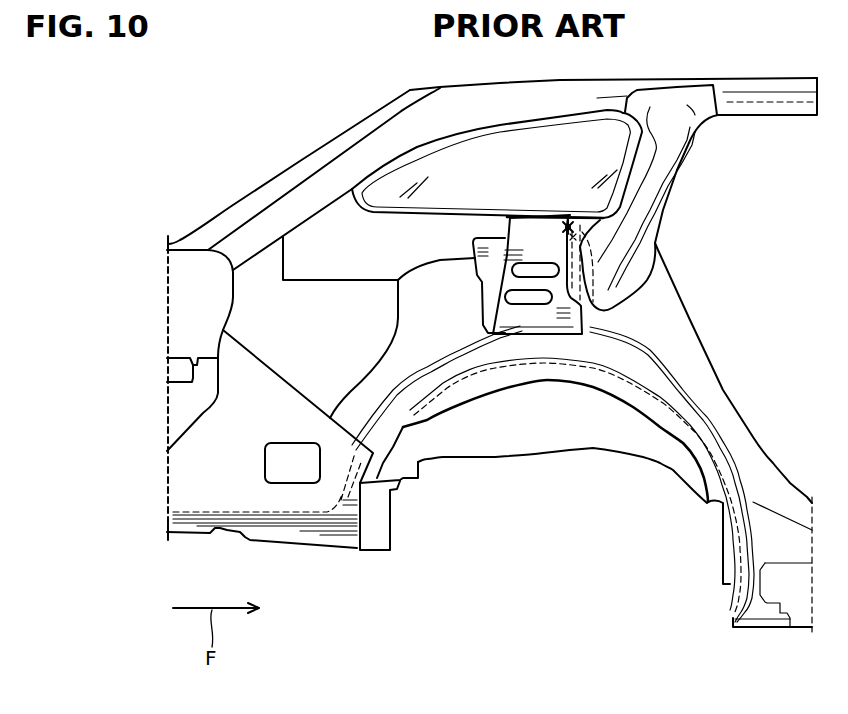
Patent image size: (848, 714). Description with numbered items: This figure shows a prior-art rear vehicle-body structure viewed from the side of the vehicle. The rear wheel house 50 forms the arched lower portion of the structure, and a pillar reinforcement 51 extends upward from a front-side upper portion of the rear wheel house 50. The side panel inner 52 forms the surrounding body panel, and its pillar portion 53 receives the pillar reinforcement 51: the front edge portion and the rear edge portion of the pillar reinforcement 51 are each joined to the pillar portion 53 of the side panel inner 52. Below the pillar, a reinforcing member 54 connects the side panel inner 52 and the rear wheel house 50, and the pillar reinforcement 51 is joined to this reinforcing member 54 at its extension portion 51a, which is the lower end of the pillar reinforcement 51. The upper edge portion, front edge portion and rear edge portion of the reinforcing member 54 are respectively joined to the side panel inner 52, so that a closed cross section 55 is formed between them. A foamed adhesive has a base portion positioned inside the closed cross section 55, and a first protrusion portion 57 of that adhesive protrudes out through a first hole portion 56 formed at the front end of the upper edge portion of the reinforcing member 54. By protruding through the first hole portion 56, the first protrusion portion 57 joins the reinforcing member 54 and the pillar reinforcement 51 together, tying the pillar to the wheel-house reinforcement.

The rear wheel house 50 is at (641, 413).
The pillar reinforcement 51 is at (690, 157).
The extension portion 51a is at (600, 287).
The side panel inner 52 is at (322, 227).
The pillar portion 53 is at (650, 272).
The reinforcing member 54 is at (505, 320).
The closed cross section 55 is at (505, 295).
The first hole portion 56 is at (585, 215).
The first protrusion portion 57 is at (568, 224).